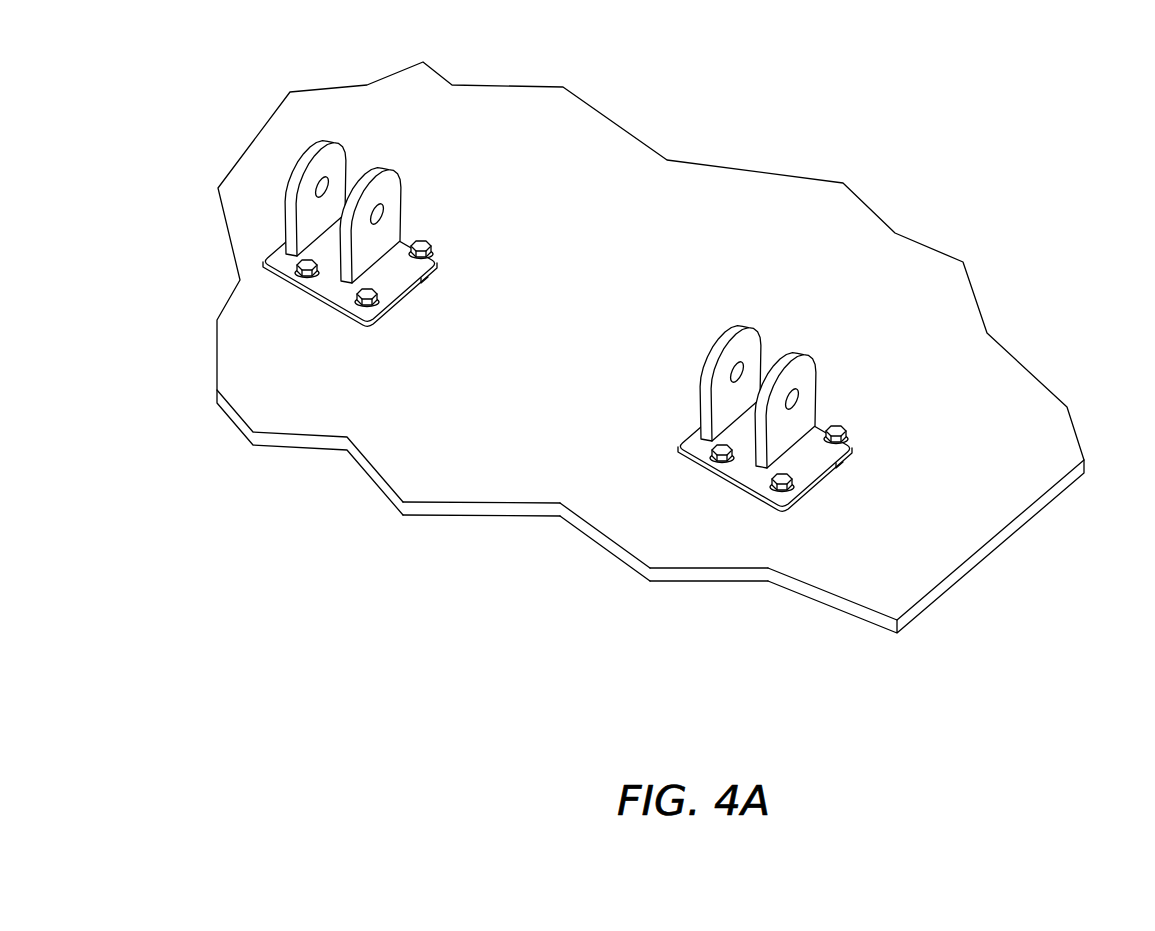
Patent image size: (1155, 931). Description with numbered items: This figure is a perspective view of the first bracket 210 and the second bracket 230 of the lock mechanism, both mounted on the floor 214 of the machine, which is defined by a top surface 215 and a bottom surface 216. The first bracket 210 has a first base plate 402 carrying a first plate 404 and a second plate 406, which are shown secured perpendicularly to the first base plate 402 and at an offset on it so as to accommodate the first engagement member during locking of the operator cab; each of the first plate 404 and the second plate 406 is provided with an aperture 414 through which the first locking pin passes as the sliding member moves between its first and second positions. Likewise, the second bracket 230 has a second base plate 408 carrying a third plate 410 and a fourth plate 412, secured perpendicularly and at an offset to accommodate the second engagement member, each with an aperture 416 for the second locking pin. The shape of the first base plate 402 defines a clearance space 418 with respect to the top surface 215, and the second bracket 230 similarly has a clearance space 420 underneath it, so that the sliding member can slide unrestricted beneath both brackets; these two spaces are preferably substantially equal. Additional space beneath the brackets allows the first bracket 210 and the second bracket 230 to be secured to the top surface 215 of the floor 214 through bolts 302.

The first bracket 210 is at (896, 397).
The floor 214 is at (592, 541).
The top surface 215 is at (517, 479).
The bottom surface 216 is at (697, 587).
The second bracket 230 is at (454, 314).
The bolts 302 is at (340, 220).
The first base plate 402 is at (850, 457).
The first plate 404 is at (794, 356).
The second plate 406 is at (740, 327).
The second base plate 408 is at (440, 270).
The third plate 410 is at (383, 168).
The fourth plate 412 is at (317, 148).
The aperture 414 is at (793, 399).
The aperture 416 is at (377, 212).
The clearance space 418 is at (838, 486).
The clearance space 420 is at (415, 299).